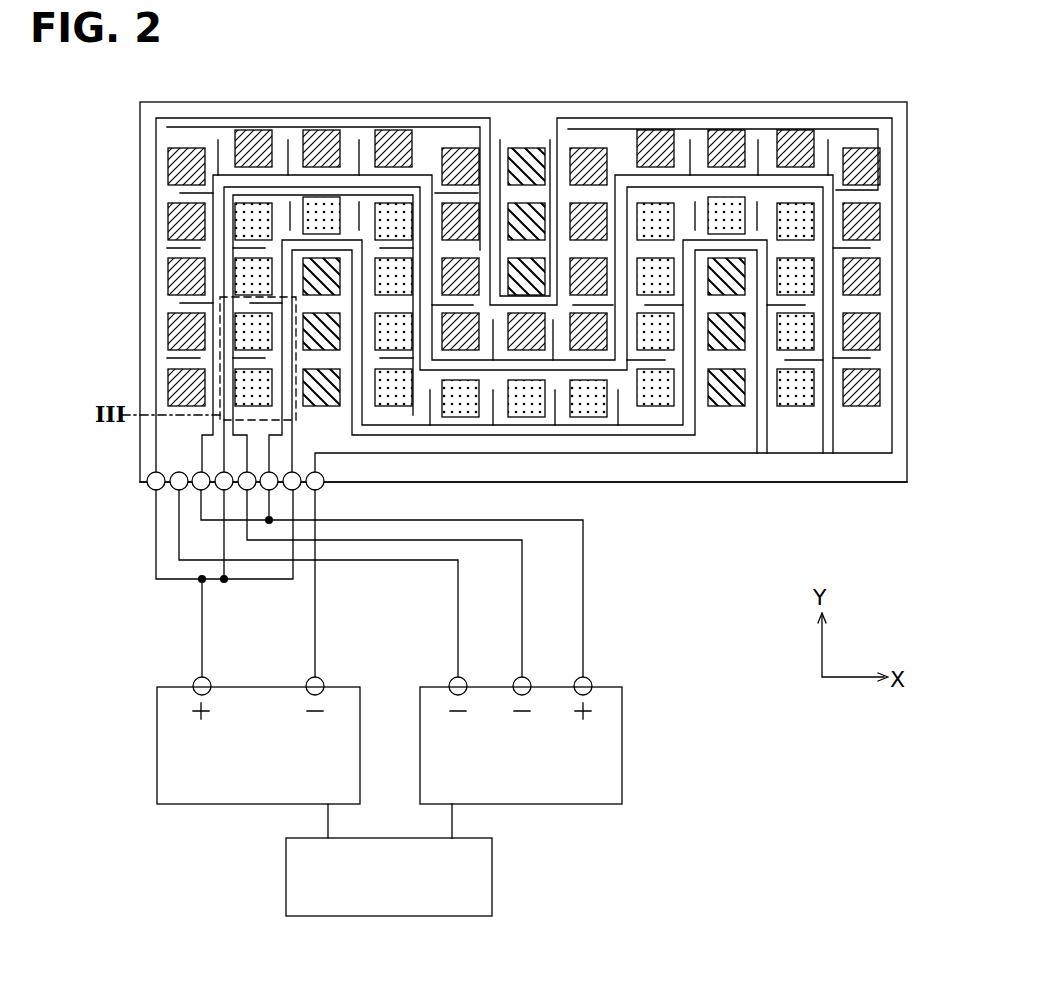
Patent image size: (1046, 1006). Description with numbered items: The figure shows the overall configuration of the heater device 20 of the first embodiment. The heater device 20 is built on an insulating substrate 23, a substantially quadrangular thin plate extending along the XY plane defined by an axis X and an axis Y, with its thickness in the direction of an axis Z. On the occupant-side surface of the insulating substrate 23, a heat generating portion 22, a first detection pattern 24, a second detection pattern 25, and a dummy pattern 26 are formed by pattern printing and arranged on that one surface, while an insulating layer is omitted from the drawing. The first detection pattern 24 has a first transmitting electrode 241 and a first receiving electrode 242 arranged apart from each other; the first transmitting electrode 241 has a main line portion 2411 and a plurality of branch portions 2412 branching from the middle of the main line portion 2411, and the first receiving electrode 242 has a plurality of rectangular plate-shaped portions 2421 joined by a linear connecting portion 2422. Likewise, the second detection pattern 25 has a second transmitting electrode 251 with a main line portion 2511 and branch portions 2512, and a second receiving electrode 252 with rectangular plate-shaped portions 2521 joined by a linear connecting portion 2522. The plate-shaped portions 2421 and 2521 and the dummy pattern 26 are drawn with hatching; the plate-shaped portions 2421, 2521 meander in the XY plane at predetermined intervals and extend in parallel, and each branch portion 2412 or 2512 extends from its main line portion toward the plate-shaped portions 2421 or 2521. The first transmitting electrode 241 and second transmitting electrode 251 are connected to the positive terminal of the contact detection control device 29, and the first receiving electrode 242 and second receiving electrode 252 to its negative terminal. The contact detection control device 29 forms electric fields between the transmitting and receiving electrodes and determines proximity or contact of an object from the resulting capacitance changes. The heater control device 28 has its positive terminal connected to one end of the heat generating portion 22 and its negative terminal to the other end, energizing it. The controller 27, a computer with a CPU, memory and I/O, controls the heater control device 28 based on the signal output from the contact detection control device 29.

The heater device 20 is at (843, 90).
The heat generating portion 22 is at (197, 118).
The insulating substrate 23 is at (872, 483).
The first detection pattern 24 is at (111, 277).
The first transmitting electrode 241 is at (190, 302).
The first receiving electrode 242 is at (188, 323).
The second detection pattern 25 is at (145, 268).
The second transmitting electrode 251 is at (253, 247).
The second receiving electrode 252 is at (245, 212).
The dummy pattern 26 is at (726, 402).
The controller 27 is at (492, 874).
The heater control device 28 is at (157, 738).
The contact detection control device 29 is at (622, 738).
The main line portion 2411 is at (495, 215).
The branch portions 2412 is at (442, 217).
The plate-shaped portions 2421 is at (568, 218).
The linear connecting portion 2422 is at (586, 210).
The main line portion 2511 is at (322, 235).
The branch portions 2512 is at (285, 215).
The plate-shaped portions 2521 is at (413, 217).
The linear connecting portion 2522 is at (372, 217).